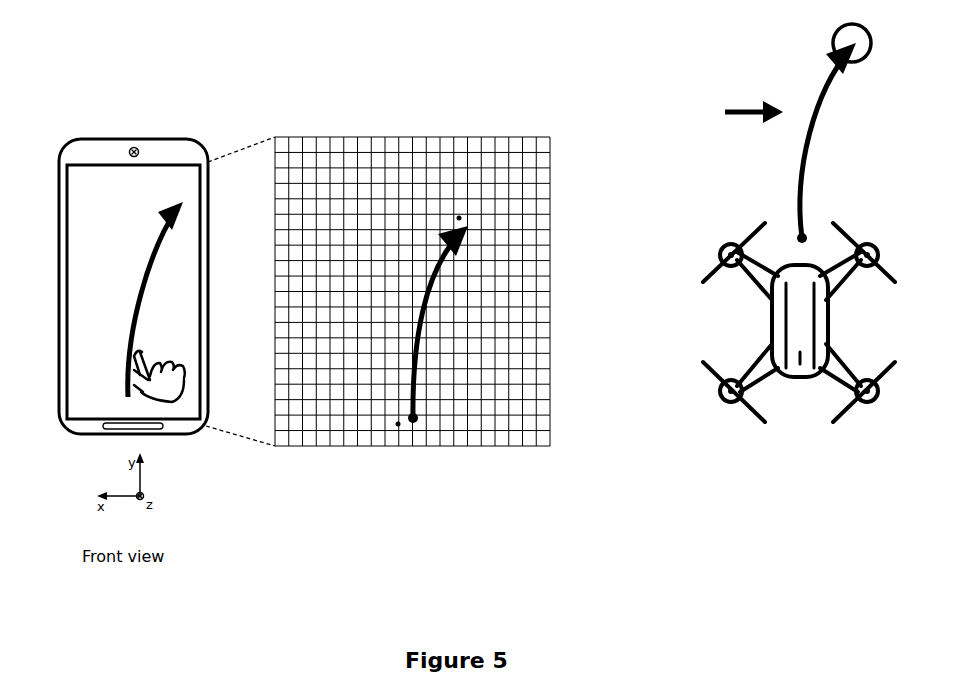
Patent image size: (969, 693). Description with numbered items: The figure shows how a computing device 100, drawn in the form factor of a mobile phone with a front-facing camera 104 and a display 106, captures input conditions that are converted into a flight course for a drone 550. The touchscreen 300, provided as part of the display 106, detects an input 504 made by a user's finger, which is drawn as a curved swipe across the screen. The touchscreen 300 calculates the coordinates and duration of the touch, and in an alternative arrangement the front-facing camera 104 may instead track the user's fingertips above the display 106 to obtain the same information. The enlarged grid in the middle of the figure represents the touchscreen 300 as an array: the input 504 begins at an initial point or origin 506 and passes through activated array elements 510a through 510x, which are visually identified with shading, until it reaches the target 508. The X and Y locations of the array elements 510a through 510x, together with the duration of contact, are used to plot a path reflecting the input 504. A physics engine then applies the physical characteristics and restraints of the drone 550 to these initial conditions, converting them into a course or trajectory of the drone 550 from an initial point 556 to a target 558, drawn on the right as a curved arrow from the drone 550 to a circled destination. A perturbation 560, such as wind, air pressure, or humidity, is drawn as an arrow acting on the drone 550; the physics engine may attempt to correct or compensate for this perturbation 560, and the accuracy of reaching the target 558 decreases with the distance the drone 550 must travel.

The computing device 100 is at (206, 108).
The front-facing camera 104 is at (136, 146).
The display 106 is at (82, 423).
The touchscreen 300 is at (545, 481).
The input 504 is at (130, 322).
The initial point or origin 506 is at (416, 424).
The target 508 is at (466, 236).
The array element 510a is at (396, 424).
The array element 510x is at (462, 214).
The drone 550 is at (762, 420).
The initial point 556 is at (807, 226).
The target 558 is at (851, 62).
The perturbation 560 is at (746, 103).